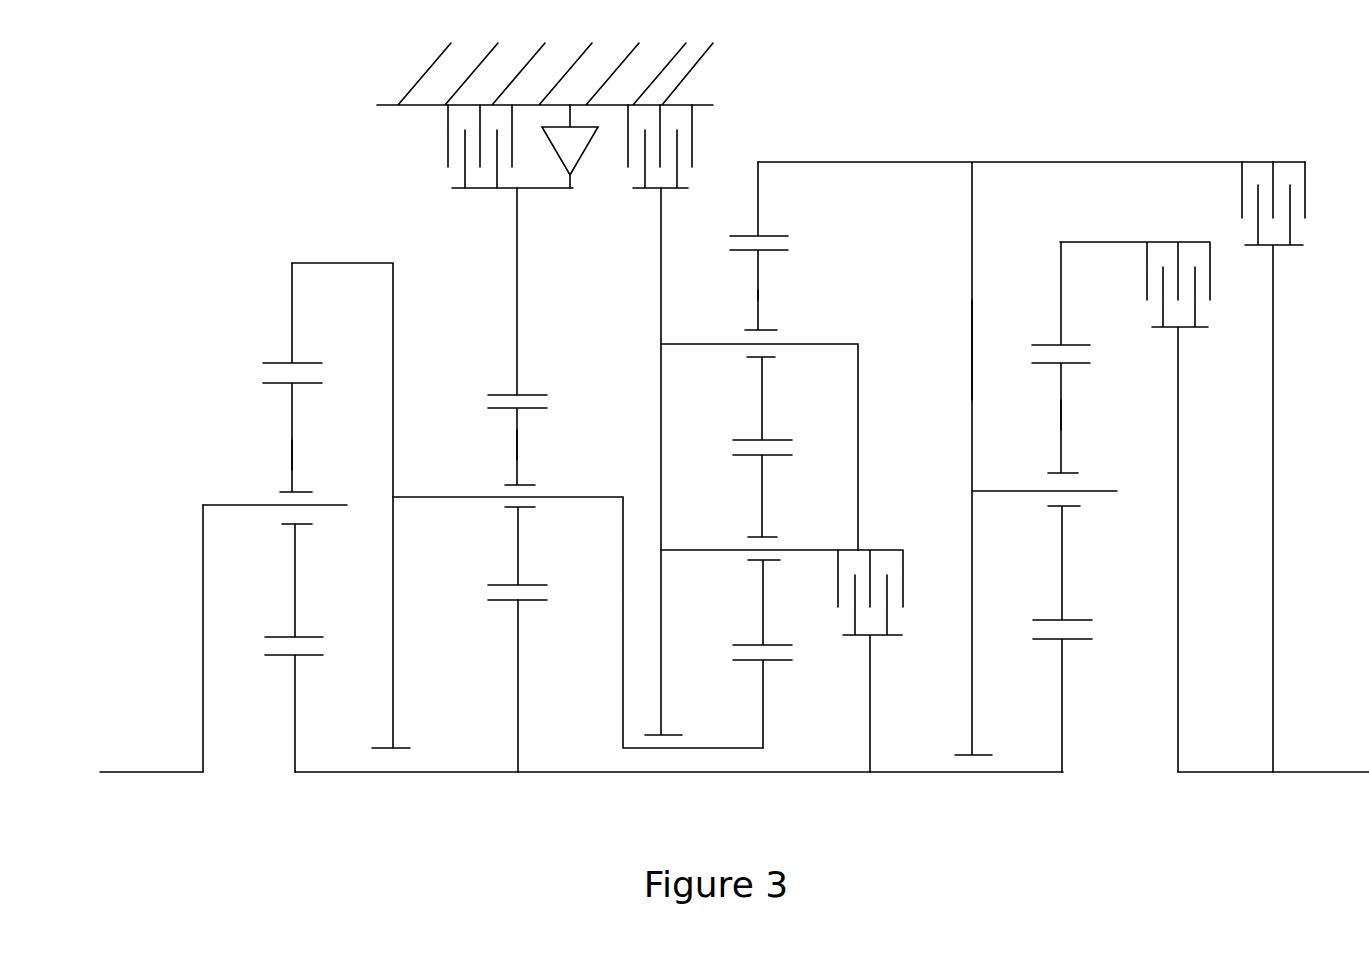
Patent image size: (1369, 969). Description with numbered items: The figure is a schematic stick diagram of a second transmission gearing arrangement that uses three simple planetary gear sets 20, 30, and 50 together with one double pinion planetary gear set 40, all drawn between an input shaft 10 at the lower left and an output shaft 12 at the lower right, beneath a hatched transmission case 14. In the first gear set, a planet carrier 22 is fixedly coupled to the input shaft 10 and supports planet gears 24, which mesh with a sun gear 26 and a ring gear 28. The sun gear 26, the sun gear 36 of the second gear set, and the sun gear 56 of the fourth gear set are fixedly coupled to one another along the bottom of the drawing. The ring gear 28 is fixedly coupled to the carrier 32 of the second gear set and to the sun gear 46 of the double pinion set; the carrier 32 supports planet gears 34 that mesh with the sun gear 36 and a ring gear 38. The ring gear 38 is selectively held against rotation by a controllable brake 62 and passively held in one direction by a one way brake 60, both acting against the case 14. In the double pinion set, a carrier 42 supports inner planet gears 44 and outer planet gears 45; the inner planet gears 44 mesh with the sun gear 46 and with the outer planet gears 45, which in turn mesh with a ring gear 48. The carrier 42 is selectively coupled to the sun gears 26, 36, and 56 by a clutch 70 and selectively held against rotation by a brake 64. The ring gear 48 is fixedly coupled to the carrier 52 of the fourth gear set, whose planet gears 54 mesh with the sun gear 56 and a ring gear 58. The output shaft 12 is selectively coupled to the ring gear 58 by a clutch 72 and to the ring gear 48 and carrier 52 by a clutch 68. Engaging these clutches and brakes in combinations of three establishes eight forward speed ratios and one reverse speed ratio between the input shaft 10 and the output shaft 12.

The input shaft 10 is at (142, 772).
The output shaft 12 is at (1267, 772).
The transmission case 14 is at (437, 63).
The planetary gear set 20 is at (633, 668).
The planet carrier 22 is at (203, 573).
The planet gears 24 is at (295, 450).
The sun gear 26 is at (295, 713).
The ring gear 28 is at (292, 318).
The planetary gear set 30 is at (578, 510).
The planet carrier 32 is at (393, 418).
The planet gears 34 is at (517, 463).
The sun gear 36 is at (518, 657).
The ring gear 38 is at (517, 330).
The double pinion planetary gear set 40 is at (759, 588).
The planet carrier 42 is at (661, 383).
The inner planet gears 44 is at (762, 503).
The outer planet gears 45 is at (759, 292).
The sun gear 46 is at (763, 717).
The ring gear 48 is at (758, 183).
The planetary gear set 50 is at (1031, 497).
The planet carrier 52 is at (972, 393).
The planet gears 54 is at (1061, 440).
The sun gear 56 is at (1063, 695).
The ring gear 58 is at (1061, 300).
The one way brake 60 is at (588, 143).
The controllable brake 62 is at (448, 146).
The brake 64 is at (692, 137).
The clutch 68 is at (1285, 158).
The clutch 70 is at (907, 583).
The clutch 72 is at (1193, 238).